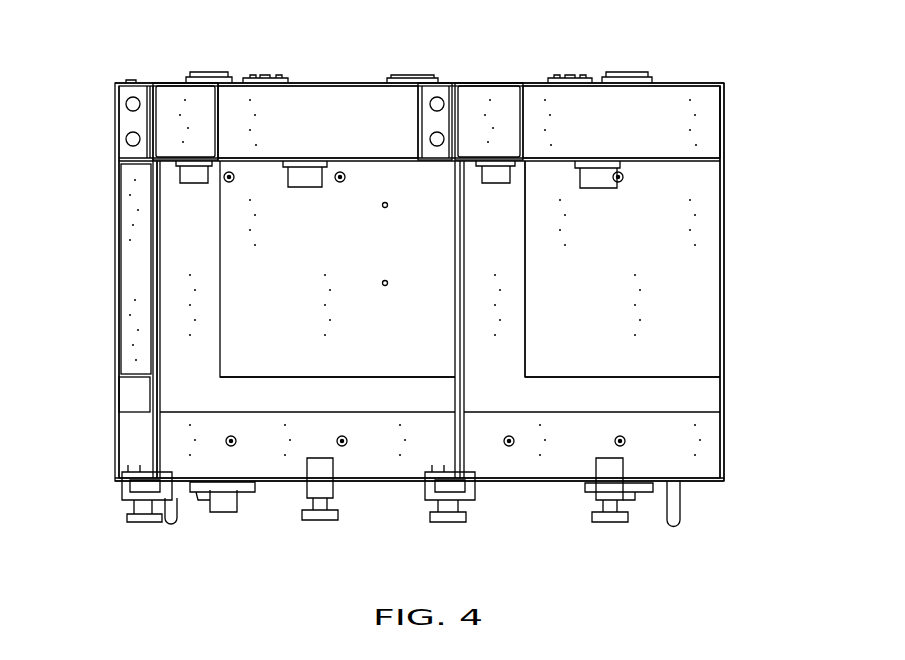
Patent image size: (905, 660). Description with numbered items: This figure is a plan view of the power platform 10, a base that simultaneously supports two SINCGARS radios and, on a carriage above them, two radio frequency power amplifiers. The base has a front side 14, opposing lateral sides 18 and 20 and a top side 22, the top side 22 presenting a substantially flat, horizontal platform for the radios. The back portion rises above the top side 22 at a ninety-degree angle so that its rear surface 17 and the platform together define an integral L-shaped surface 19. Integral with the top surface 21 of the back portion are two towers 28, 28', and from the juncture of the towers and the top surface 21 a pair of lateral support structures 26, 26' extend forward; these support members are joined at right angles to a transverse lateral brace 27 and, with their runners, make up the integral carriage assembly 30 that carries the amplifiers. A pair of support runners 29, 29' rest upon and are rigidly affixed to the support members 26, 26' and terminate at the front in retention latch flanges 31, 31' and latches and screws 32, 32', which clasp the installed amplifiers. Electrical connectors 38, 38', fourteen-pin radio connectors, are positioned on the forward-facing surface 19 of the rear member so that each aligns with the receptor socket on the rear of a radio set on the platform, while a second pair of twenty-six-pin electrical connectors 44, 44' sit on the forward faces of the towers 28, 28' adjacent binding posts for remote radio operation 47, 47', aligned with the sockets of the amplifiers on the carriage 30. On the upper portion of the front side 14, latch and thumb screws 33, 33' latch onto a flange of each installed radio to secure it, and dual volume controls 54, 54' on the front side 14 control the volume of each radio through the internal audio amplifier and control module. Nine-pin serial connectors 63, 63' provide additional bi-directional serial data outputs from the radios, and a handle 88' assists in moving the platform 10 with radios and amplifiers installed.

The power platform 10 is at (786, 213).
The front side 14 is at (285, 482).
The rear surface 17 is at (690, 82).
The lateral side 18 is at (724, 313).
The L-shaped surface 19 is at (670, 162).
The lateral side 20 is at (116, 316).
The top surface 21 is at (332, 120).
The top side 22 is at (658, 263).
The lateral support structure 26 is at (332, 269).
The lateral support structure 26' is at (548, 269).
The transverse lateral brace 27 is at (397, 384).
The tower 28 is at (176, 94).
The tower 28' is at (485, 94).
The support runner 29 is at (103, 319).
The support runner 29' is at (408, 319).
The carriage assembly 30 is at (134, 228).
The retention latch flange 31 is at (114, 472).
The retention latch flange 31' is at (423, 495).
The latch and screw 32 is at (144, 542).
The latch and screw 32' is at (451, 542).
The latch and thumb screw 33 is at (320, 521).
The latch and thumb screw 33' is at (605, 521).
The electrical connector 38 is at (305, 207).
The electrical connector 38' is at (598, 208).
The second electrical connector 44 is at (194, 207).
The second electrical connector 44' is at (495, 207).
The binding posts for remote radio operation 47 is at (95, 119).
The second mounting hole 47' is at (402, 121).
The volume control 54 is at (222, 533).
The volume control 54' is at (622, 534).
The serial connector 63 is at (265, 52).
The serial connector 63' is at (570, 52).
The handle 88' is at (430, 533).